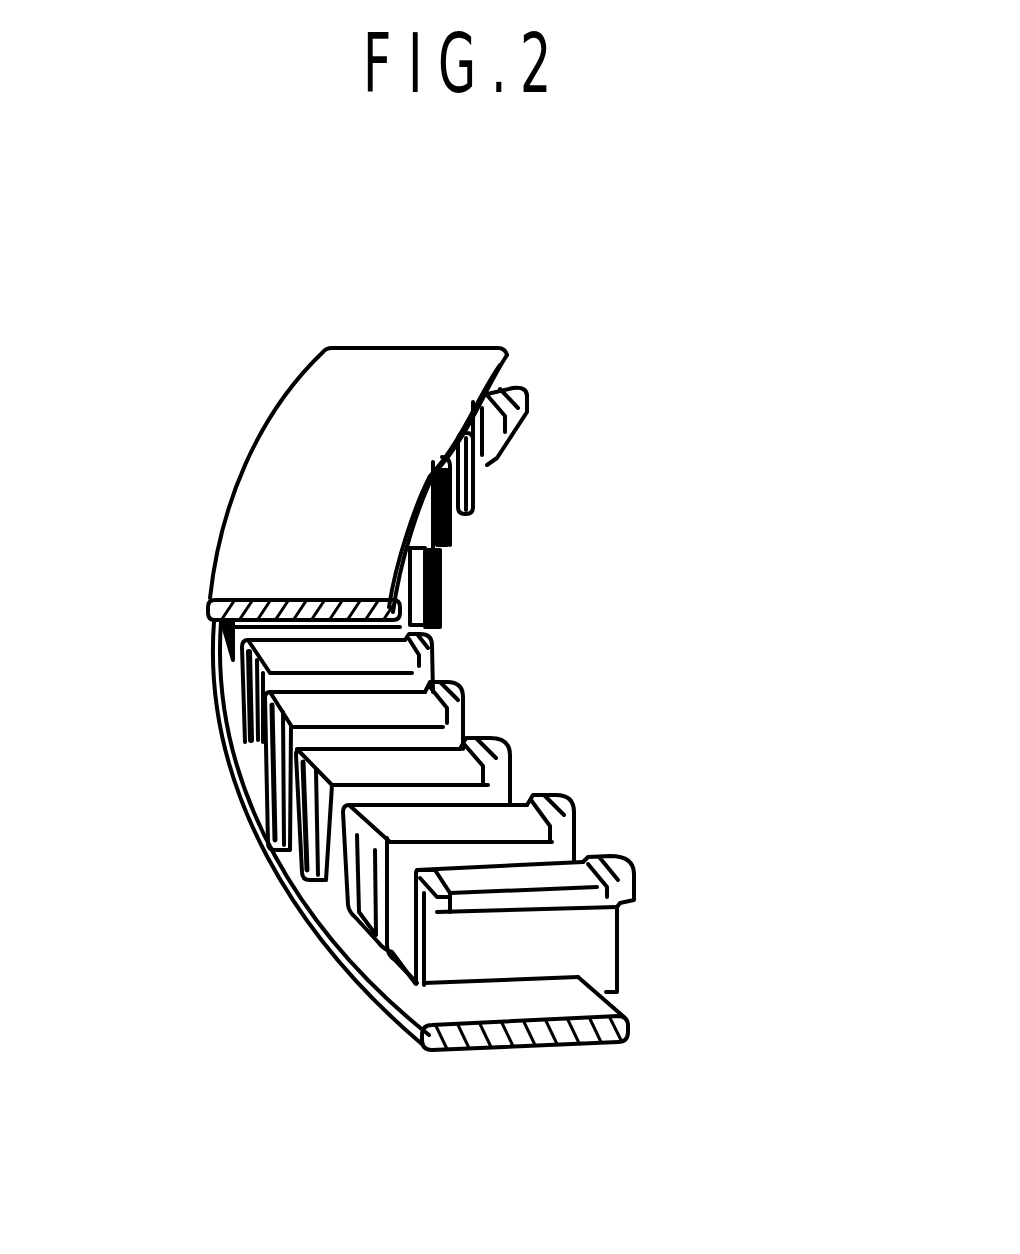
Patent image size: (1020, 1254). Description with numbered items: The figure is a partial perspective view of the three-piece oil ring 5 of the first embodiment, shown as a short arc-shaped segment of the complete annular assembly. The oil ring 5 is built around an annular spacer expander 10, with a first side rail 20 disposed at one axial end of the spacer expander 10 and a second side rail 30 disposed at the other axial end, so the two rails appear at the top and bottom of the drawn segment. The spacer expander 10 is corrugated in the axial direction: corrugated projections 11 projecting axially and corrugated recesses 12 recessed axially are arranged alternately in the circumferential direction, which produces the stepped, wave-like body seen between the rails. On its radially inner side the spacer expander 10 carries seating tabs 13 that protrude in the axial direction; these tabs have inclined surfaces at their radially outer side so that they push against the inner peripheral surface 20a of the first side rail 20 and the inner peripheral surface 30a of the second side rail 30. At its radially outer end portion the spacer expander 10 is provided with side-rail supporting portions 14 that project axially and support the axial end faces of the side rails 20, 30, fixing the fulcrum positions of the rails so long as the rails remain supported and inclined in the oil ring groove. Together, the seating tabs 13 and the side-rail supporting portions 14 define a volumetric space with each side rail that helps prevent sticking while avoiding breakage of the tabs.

The three-piece oil ring 5 is at (645, 545).
The spacer expander 10 is at (598, 940).
The corrugated projections 11 is at (482, 823).
The corrugated recesses 12 is at (403, 943).
The seating tabs 13 is at (481, 740).
The side-rail supporting portions 14 is at (365, 815).
The first side rail 20 is at (263, 503).
The inner peripheral surface of the first side rail 20a is at (490, 377).
The second side rail 30 is at (545, 1052).
The inner peripheral surface of the second side rail 30a is at (623, 1032).